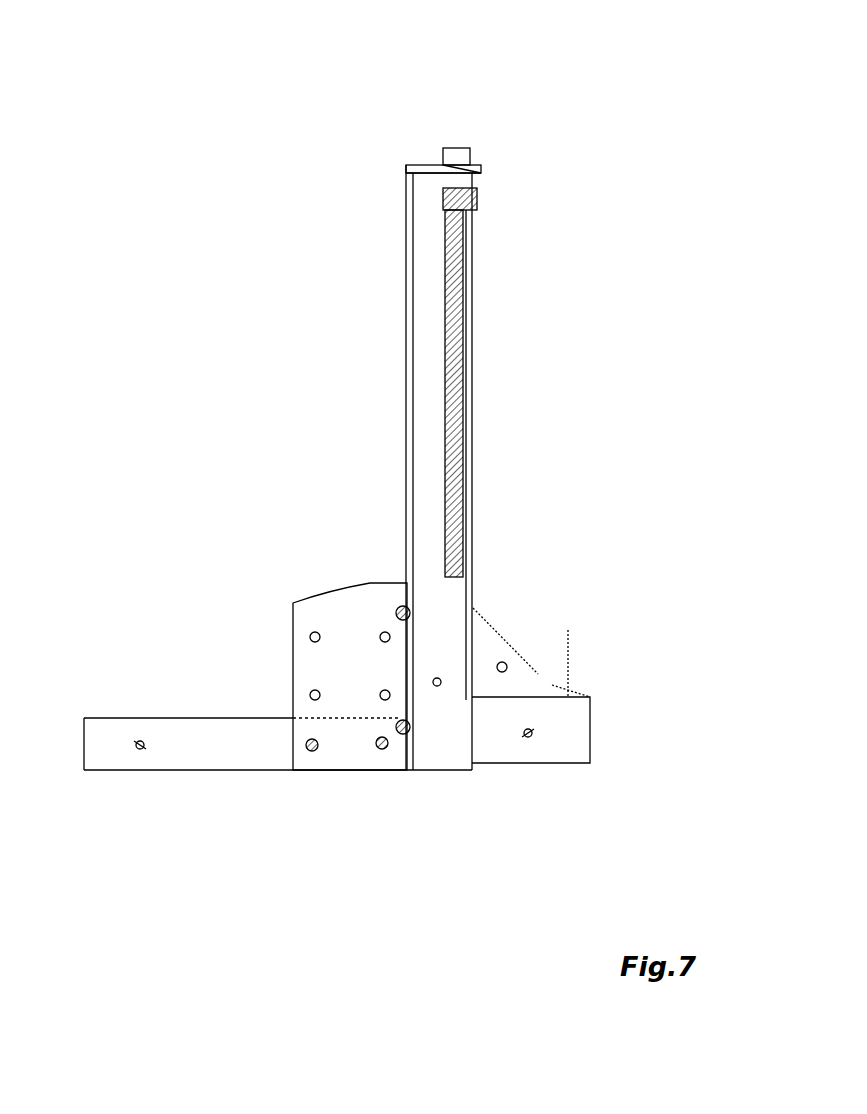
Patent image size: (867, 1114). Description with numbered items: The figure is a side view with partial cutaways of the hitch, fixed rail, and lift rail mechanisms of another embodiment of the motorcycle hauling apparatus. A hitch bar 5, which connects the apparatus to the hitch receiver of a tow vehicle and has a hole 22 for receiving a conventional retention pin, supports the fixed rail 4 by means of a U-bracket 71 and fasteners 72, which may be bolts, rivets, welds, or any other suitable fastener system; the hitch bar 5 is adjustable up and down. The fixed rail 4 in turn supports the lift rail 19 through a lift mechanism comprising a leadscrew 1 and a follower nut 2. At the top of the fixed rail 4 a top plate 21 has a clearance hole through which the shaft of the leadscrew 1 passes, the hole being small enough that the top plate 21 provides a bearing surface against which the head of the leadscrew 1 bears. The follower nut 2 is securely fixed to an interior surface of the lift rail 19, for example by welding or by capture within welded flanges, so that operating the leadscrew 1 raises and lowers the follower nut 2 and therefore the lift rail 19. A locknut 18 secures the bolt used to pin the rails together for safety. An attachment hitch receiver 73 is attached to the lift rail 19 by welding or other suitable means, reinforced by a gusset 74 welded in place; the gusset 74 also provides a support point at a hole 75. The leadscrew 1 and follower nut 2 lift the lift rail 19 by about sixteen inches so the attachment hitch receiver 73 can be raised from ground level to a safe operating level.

The leadscrew 1 is at (467, 145).
The follower nut 2 is at (479, 198).
The fixed rail 4 is at (406, 282).
The hitch bar 5 is at (195, 718).
The locknut 18 is at (436, 690).
The lift rail 19 is at (483, 180).
The top plate 21 is at (420, 158).
The hole 22 is at (528, 733).
The U-bracket 71 is at (330, 590).
The fasteners 72 is at (400, 608).
The attachment hitch receiver 73 is at (593, 735).
The gusset 74 is at (520, 650).
The hole 75 is at (502, 662).